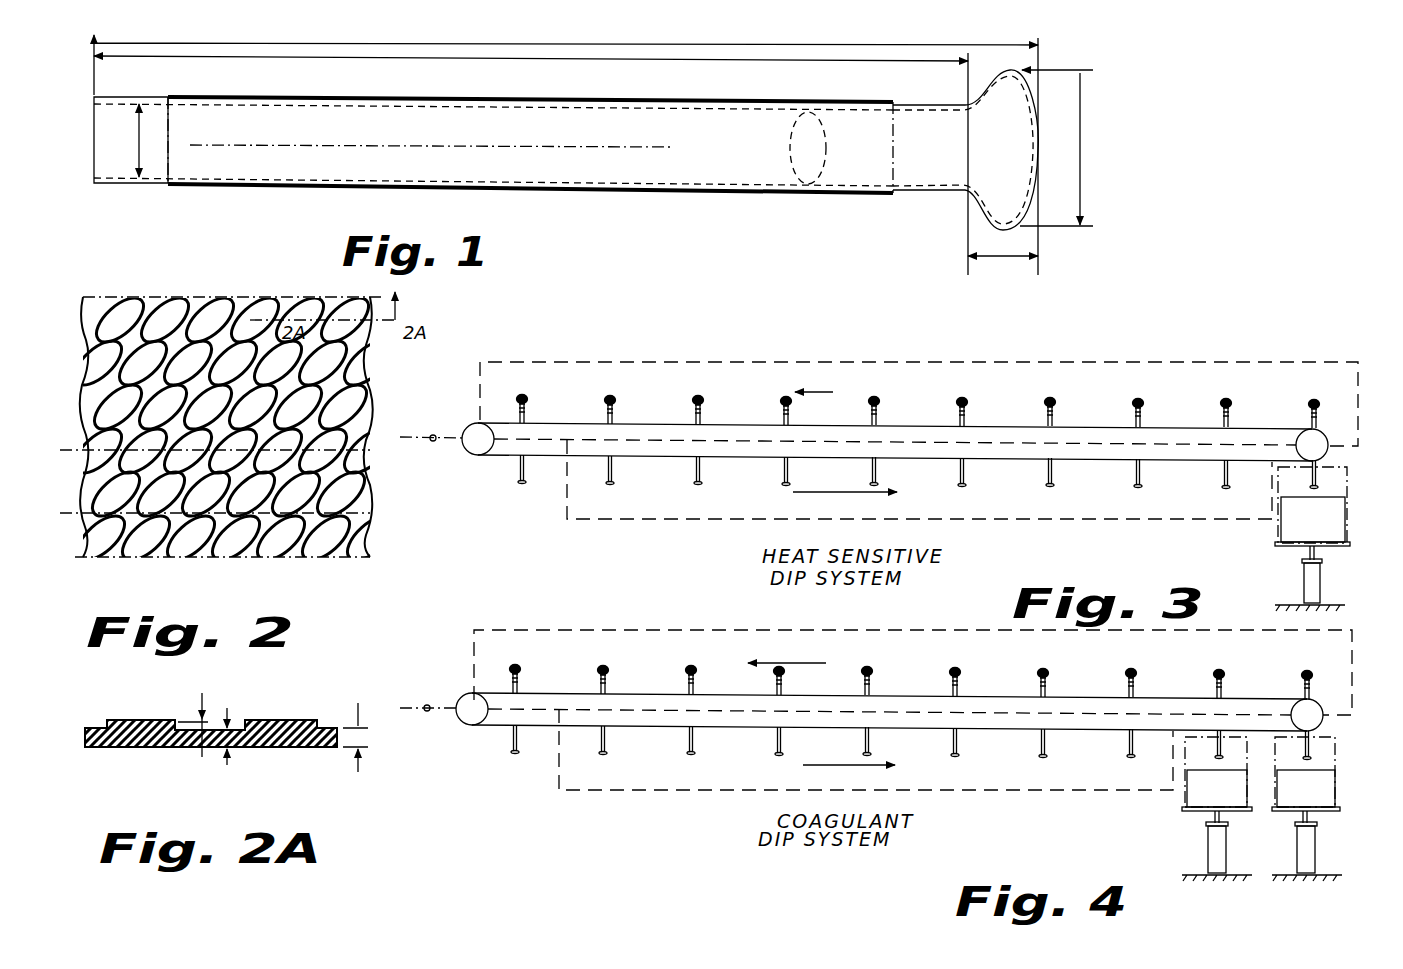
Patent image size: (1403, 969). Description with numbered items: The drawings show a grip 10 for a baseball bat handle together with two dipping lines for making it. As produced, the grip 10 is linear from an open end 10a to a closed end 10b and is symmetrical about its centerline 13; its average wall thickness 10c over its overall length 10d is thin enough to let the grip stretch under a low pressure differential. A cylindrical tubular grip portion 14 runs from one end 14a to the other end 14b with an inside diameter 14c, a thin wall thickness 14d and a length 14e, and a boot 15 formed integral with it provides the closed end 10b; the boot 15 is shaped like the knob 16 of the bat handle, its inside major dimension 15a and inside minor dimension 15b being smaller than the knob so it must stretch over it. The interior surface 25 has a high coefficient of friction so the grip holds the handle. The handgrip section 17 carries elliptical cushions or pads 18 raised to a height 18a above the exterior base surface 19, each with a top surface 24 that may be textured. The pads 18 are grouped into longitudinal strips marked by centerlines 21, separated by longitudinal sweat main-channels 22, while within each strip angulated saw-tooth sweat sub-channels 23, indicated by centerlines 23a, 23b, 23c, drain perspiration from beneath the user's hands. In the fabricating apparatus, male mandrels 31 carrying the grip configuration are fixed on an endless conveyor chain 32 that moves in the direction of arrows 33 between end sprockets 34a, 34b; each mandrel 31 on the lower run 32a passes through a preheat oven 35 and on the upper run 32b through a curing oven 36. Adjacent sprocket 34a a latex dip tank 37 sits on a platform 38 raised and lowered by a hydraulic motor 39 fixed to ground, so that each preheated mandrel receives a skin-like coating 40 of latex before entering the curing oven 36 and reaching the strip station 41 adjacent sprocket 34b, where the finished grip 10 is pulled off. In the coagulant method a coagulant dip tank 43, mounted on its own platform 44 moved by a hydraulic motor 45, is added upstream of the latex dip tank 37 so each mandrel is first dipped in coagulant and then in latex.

In FIG. 1, the grip 10 is at (524, 208).
In FIG. 3, the grip 10 is at (432, 434).
In FIG. 4, the grip 10 is at (414, 698).
In FIG. 1, the open end 10a is at (85, 158).
In FIG. 1, the closed end 10b is at (1025, 150).
In FIG. 2A, the average wall thickness 10c is at (365, 745).
In FIG. 1, the overall length 10d is at (792, 56).
In FIG. 1, the centerline 13 is at (470, 146).
In FIG. 1, the tubular grip portion 14 is at (330, 197).
In FIG. 2, the tubular grip portion 14 is at (372, 403).
In FIG. 2A, the tubular grip portion 14 is at (115, 753).
In FIG. 1, the end of tubular portion 14a is at (100, 97).
In FIG. 1, the other end of tubular portion 14b is at (943, 105).
In FIG. 1, the inside diameter 14c is at (139, 152).
In FIG. 2A, the wall thickness 14d is at (228, 765).
In FIG. 1, the length of tubular portion 14e is at (528, 62).
In FIG. 1, the boot 15 is at (1003, 72).
In FIG. 1, the inside major dimension of boot 15a is at (1079, 148).
In FIG. 1, the inside minor dimension of boot 15b is at (1000, 262).
In FIG. 1, the knob 16 is at (788, 153).
In FIG. 1, the handgrip section 17 is at (640, 100).
In FIG. 2, the handgrip section 17 is at (197, 296).
In FIG. 2, the cushions or pads 18 is at (135, 358).
In FIG. 2A, the cushions or pads 18 is at (107, 722).
In FIG. 2A, the pad height 18a is at (213, 727).
In FIG. 2A, the exterior base surface 19 is at (212, 748).
In FIG. 2, the longitudinal strip centerlines 21 is at (83, 450).
In FIG. 2, the sweat main-channels 22 is at (85, 512).
In FIG. 2, the sweat sub-channels 23 is at (205, 546).
In FIG. 2A, the sweat sub-channels 23 is at (240, 727).
In FIG. 2, the sweat sub-channel centerline 23a is at (292, 560).
In FIG. 2, the sweat sub-channel centerline 23b is at (301, 491).
In FIG. 2, the sweat sub-channel centerline 23c is at (297, 414).
In FIG. 2A, the pad top surface 24 is at (135, 720).
In FIG. 1, the interior surface 25 is at (363, 180).
In FIG. 2A, the interior surface 25 is at (155, 748).
In FIG. 3, the male mandrels 31 is at (695, 476).
In FIG. 4, the male mandrels 31 is at (690, 745).
In FIG. 3, the endless conveyor chain 32 is at (754, 457).
In FIG. 4, the endless conveyor chain 32 is at (750, 732).
In FIG. 3, the lower run of chain 32a is at (998, 466).
In FIG. 4, the lower run of chain 32a is at (1030, 735).
In FIG. 3, the upper run of chain 32b is at (1030, 428).
In FIG. 4, the upper run of chain 32b is at (1027, 698).
In FIG. 3, the direction arrows 33 is at (812, 395).
In FIG. 4, the direction arrows 33 is at (807, 665).
In FIG. 3, the end sprocket 34a is at (1318, 438).
In FIG. 4, the end sprocket 34a is at (1310, 708).
In FIG. 3, the end sprocket 34b is at (478, 437).
In FIG. 4, the end sprocket 34b is at (471, 704).
In FIG. 3, the preheat oven 35 is at (675, 521).
In FIG. 4, the preheat oven 35 is at (724, 794).
In FIG. 3, the curing oven 36 is at (852, 360).
In FIG. 4, the curing oven 36 is at (820, 630).
In FIG. 3, the latex dip tank 37 is at (1278, 528).
In FIG. 4, the latex dip tank 37 is at (1335, 800).
In FIG. 3, the platform 38 is at (1345, 548).
In FIG. 4, the platform 38 is at (1340, 812).
In FIG. 3, the hydraulic motor 39 is at (1320, 590).
In FIG. 4, the hydraulic motor 39 is at (1310, 858).
In FIG. 3, the skin-like coating 40 is at (614, 403).
In FIG. 4, the skin-like coating 40 is at (607, 675).
In FIG. 3, the strip station 41 is at (433, 462).
In FIG. 4, the strip station 41 is at (433, 727).
In FIG. 4, the coagulant dip tank 43 is at (1185, 797).
In FIG. 4, the platform 44 is at (1185, 810).
In FIG. 4, the hydraulic motor 45 is at (1218, 853).